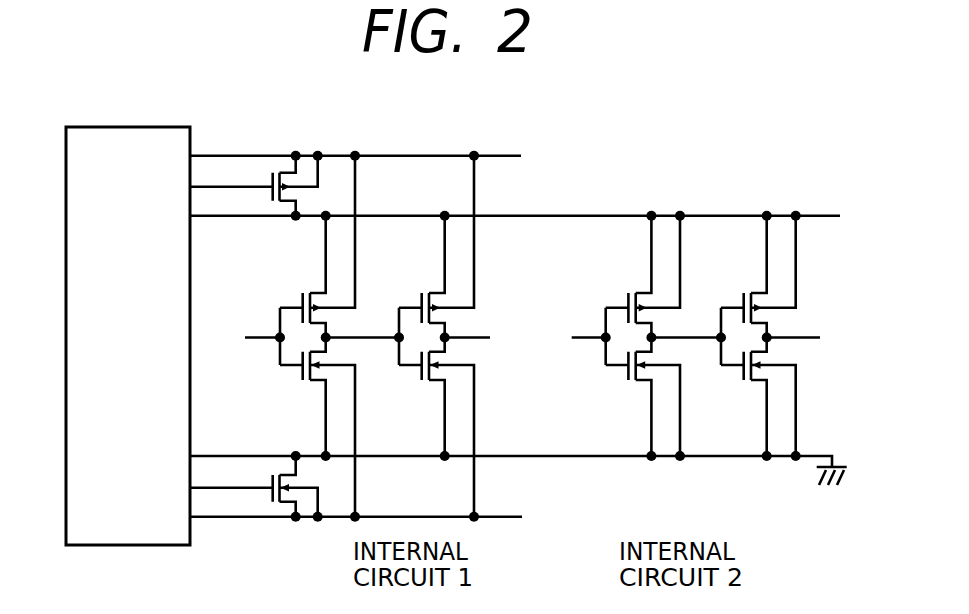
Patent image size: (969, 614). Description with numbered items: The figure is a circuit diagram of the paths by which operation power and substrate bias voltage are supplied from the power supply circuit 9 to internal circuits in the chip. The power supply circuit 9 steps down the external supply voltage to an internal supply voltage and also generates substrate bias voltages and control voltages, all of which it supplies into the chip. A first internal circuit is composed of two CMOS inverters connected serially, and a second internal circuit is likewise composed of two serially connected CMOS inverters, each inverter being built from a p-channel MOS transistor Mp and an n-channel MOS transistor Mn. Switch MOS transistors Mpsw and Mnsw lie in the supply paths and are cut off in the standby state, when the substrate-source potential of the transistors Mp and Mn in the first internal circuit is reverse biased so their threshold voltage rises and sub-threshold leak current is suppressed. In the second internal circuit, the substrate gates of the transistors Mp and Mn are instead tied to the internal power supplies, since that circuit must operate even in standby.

The power supply circuit 9 is at (90, 127).
The switch MOS transistor Mpsw is at (291, 171).
The switch MOS transistor Mnsw is at (290, 507).
The p-channel MOS transistor Mp is at (299, 292).
The n-channel MOS transistor Mn is at (301, 381).